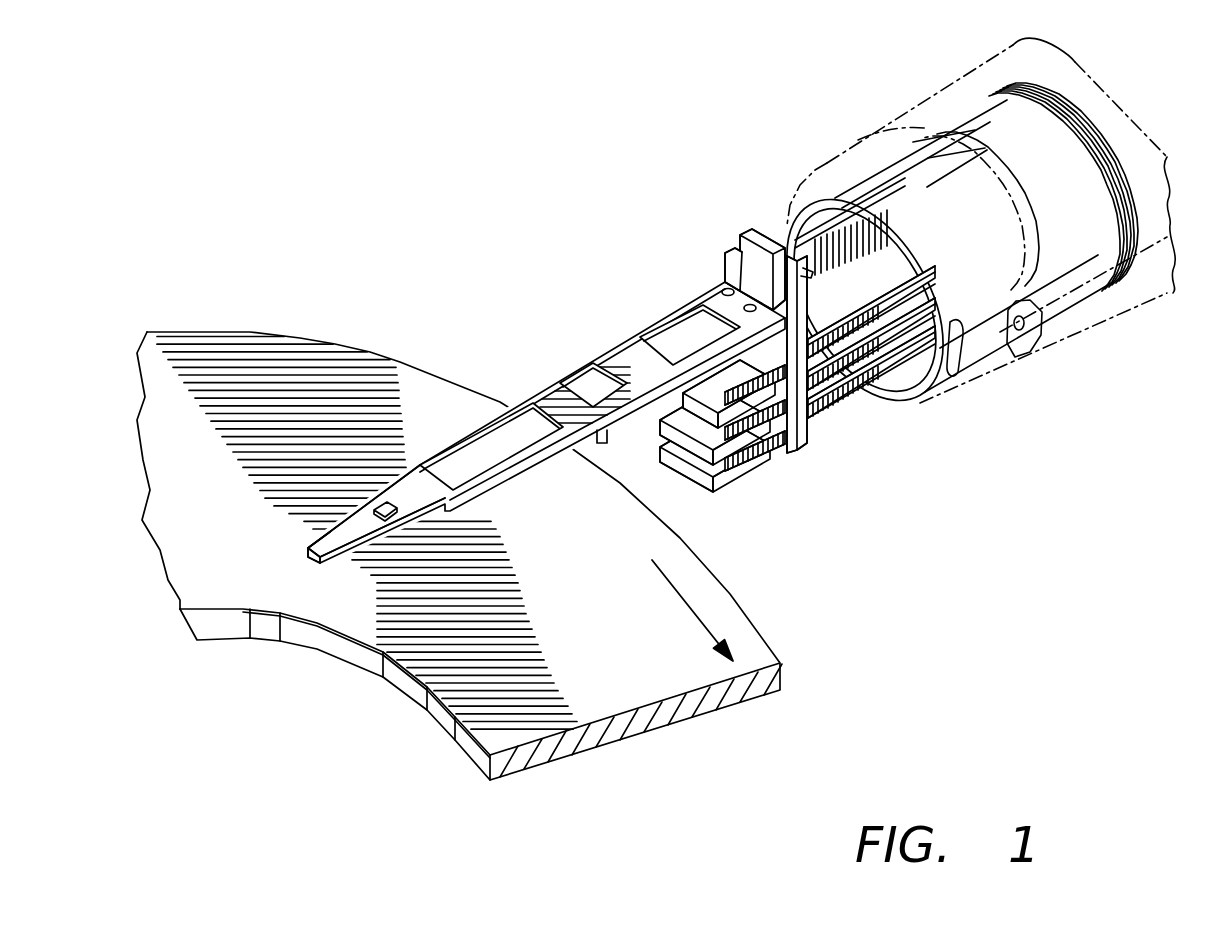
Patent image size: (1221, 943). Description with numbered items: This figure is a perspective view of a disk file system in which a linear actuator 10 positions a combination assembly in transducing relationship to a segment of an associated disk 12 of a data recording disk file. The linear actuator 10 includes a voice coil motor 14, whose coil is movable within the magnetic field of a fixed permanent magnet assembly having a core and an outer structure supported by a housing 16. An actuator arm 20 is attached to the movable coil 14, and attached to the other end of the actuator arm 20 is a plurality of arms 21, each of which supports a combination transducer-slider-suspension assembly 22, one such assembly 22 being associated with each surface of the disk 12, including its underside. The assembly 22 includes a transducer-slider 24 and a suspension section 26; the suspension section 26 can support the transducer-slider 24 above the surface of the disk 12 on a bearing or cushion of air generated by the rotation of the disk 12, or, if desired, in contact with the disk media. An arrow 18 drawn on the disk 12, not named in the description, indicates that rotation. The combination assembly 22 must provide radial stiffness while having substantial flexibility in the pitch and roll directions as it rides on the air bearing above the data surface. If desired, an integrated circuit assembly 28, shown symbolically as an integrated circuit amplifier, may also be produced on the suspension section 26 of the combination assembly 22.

The linear actuator 10 is at (762, 168).
The disk 12 is at (600, 626).
The voice coil motor 14 is at (1078, 124).
The housing 16 is at (1088, 330).
The disk rotation direction 18 is at (690, 609).
The actuator arm 20 is at (843, 450).
The arms 21 is at (590, 358).
The combination transducer-slider-suspension assembly 22 is at (345, 496).
The transducer-slider 24 is at (305, 560).
The suspension section 26 is at (318, 545).
The integrated circuit assembly 28 is at (392, 516).